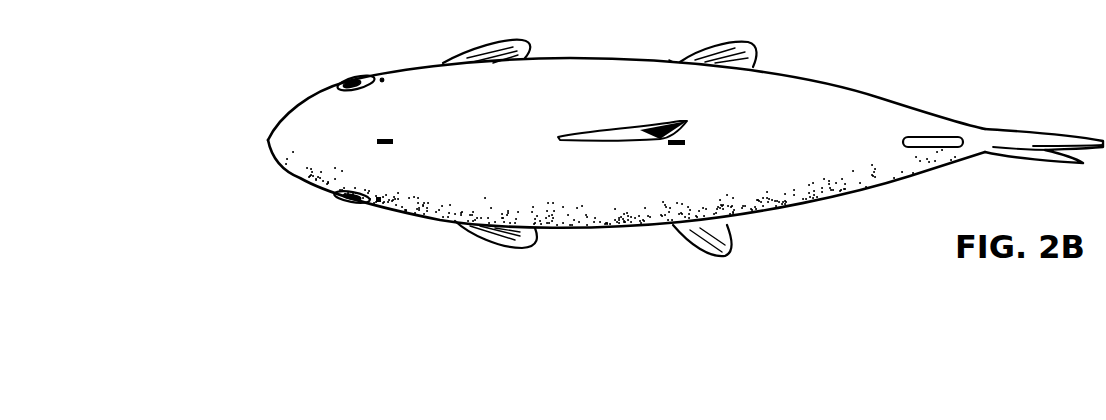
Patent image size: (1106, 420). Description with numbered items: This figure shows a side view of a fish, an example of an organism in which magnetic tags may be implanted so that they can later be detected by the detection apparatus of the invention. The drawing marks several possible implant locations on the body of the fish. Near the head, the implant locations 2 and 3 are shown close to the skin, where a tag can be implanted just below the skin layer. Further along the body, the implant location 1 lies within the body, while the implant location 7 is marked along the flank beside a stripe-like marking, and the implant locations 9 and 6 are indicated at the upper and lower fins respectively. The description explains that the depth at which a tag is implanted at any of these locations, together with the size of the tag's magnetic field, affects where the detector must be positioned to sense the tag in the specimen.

The implant location 1 is at (384, 137).
The implant location 2 is at (380, 208).
The implant location 3 is at (380, 79).
The implant location 6 is at (663, 228).
The implant location 7 is at (677, 150).
The implant location 9 is at (673, 60).